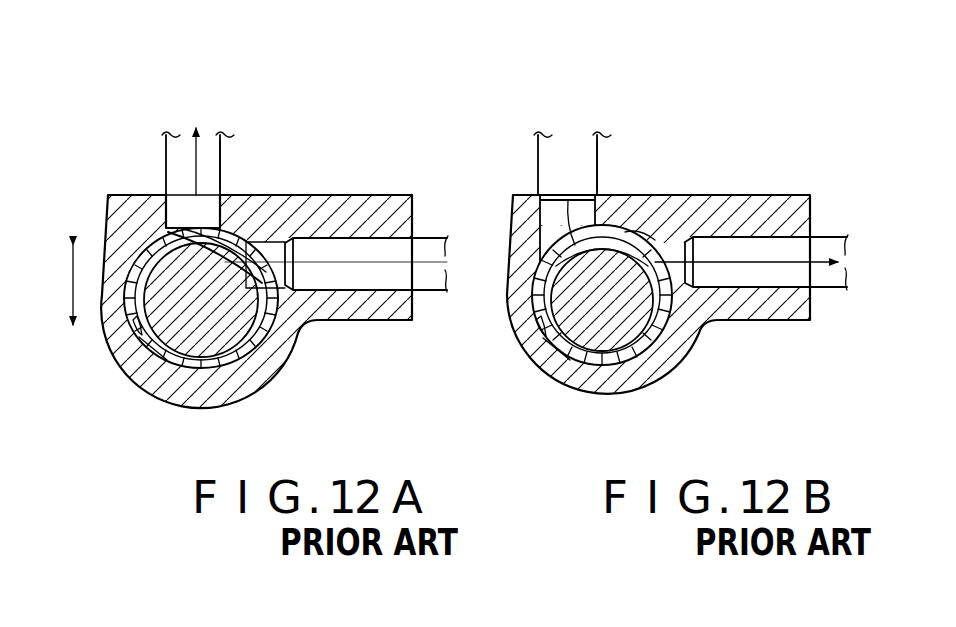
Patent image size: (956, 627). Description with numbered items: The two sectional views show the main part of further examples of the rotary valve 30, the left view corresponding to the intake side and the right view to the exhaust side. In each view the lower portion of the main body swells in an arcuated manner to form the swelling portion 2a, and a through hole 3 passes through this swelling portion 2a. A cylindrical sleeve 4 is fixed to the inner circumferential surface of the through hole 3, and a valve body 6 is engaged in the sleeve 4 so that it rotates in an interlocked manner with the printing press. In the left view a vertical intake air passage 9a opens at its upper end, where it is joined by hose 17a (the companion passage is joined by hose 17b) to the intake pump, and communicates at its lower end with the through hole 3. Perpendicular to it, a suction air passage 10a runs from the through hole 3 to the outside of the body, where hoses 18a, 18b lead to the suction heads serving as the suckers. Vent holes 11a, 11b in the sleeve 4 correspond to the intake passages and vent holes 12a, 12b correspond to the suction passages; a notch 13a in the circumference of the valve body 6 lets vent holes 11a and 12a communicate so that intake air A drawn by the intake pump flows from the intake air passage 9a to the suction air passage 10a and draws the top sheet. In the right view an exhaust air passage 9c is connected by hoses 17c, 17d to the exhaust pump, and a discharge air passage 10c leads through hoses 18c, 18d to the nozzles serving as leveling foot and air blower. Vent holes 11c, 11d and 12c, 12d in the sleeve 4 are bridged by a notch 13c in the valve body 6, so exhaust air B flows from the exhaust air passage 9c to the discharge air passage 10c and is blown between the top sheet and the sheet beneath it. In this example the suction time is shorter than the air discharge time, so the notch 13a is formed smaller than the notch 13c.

In FIG. 12A, the rotary valve 30 is at (337, 108).
In FIG. 12B, the rotary valve 30 is at (709, 115).
In FIG. 12A, the swelling portion 2a is at (236, 397).
In FIG. 12B, the swelling portion 2a is at (626, 396).
In FIG. 12A, the through hole 3 is at (137, 325).
In FIG. 12B, the through hole 3 is at (535, 335).
In FIG. 12A, the sleeve 4 is at (186, 367).
In FIG. 12B, the sleeve 4 is at (654, 347).
In FIG. 12A, the valve body 6 is at (166, 358).
In FIG. 12B, the valve body 6 is at (573, 370).
In FIG. 12A, the intake air passage 9a is at (212, 197).
In FIG. 12B, the exhaust air passage 9c is at (540, 197).
In FIG. 12A, the suction air passage 10a is at (380, 238).
In FIG. 12B, the discharge air passage 10c is at (789, 240).
In FIG. 12A, the vent hole 11a is at (158, 200).
In FIG. 12A, the vent hole 11b is at (140, 195).
In FIG. 12B, the vent hole 11c is at (550, 162).
In FIG. 12B, the vent hole 11d is at (568, 195).
In FIG. 12A, the vent hole 12a is at (312, 156).
In FIG. 12A, the vent hole 12b is at (288, 195).
In FIG. 12B, the vent hole 12c is at (702, 162).
In FIG. 12B, the vent hole 12d is at (676, 195).
In FIG. 12A, the notch 13a is at (284, 290).
In FIG. 12B, the notch 13c is at (633, 235).
In FIG. 12A, the hose 17a is at (266, 135).
In FIG. 12A, the hose 17b is at (218, 195).
In FIG. 12B, the hose 17c is at (642, 134).
In FIG. 12B, the hose 17d is at (585, 195).
In FIG. 12A, the hose 18a is at (429, 327).
In FIG. 12A, the hose 18b is at (432, 292).
In FIG. 12B, the hose 18c is at (844, 326).
In FIG. 12B, the hose 18d is at (835, 290).